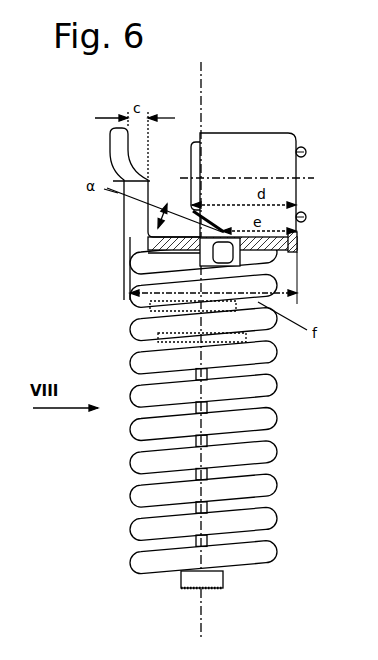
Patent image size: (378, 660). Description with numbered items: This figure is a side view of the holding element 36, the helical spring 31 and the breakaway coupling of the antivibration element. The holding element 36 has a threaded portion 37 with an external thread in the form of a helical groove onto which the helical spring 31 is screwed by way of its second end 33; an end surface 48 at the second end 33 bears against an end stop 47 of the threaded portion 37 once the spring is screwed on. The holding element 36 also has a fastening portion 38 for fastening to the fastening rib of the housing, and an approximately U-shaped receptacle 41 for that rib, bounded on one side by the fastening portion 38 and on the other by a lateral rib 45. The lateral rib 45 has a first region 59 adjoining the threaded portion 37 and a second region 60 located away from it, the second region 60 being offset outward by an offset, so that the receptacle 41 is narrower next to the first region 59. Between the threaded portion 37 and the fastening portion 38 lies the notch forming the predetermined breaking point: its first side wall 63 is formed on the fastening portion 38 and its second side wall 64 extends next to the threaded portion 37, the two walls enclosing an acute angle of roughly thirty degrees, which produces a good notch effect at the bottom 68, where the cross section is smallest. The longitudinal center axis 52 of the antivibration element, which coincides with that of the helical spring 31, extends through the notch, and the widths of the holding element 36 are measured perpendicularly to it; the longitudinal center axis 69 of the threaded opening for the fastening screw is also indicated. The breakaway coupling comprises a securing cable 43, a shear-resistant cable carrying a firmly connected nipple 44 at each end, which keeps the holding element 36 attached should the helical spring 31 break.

The helical spring 31 is at (193, 407).
The second end 33 is at (131, 263).
The holding element 36 is at (312, 130).
The threaded portion 37 is at (131, 318).
The fastening portion 38 is at (282, 167).
The receptacle 41 is at (184, 132).
The securing cable 43 is at (215, 443).
The nipple 44 is at (212, 577).
The lateral rib 45 is at (102, 163).
The end stop 47 is at (276, 278).
The end surface 48 is at (130, 238).
The longitudinal center axis 52 is at (203, 98).
The first region 59 is at (140, 218).
The second region 60 is at (110, 138).
The first side wall 63 is at (222, 230).
The second side wall 64 is at (170, 236).
The bottom 68 is at (290, 249).
The longitudinal center axis 69 is at (303, 179).